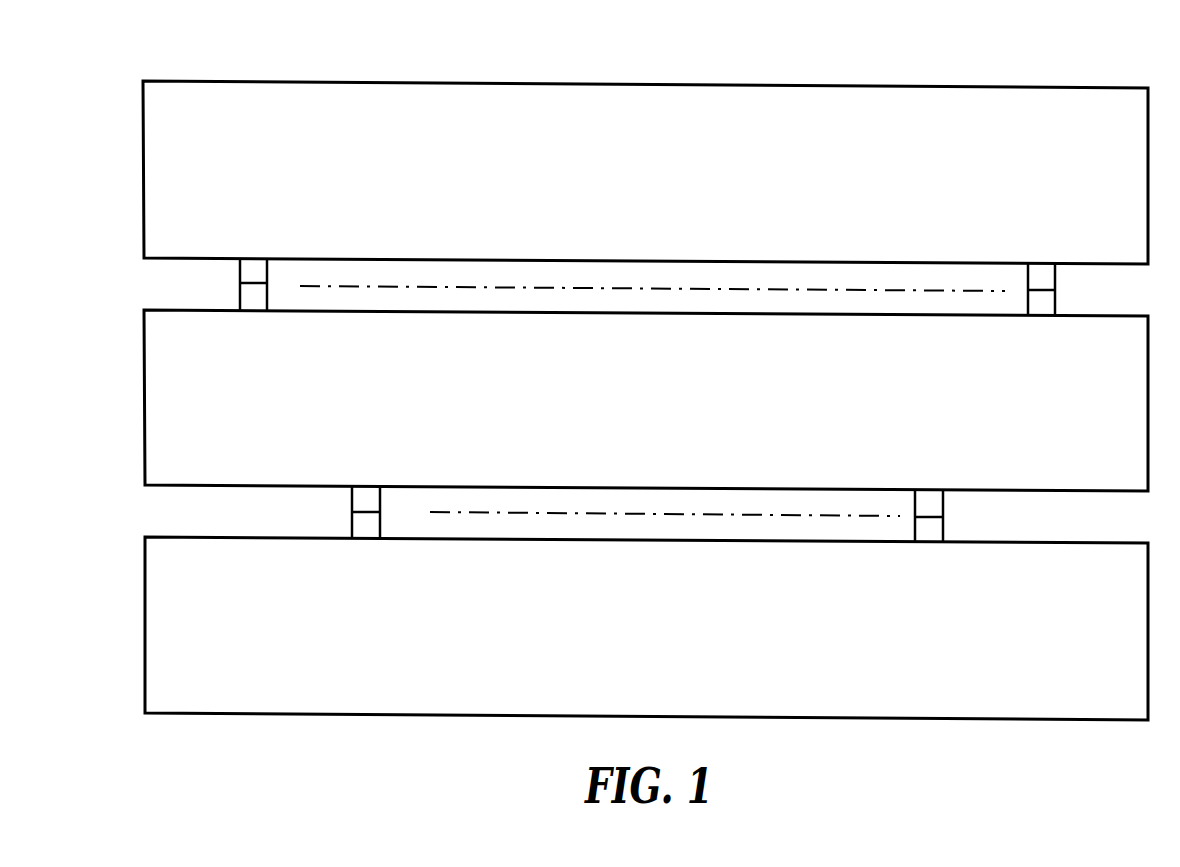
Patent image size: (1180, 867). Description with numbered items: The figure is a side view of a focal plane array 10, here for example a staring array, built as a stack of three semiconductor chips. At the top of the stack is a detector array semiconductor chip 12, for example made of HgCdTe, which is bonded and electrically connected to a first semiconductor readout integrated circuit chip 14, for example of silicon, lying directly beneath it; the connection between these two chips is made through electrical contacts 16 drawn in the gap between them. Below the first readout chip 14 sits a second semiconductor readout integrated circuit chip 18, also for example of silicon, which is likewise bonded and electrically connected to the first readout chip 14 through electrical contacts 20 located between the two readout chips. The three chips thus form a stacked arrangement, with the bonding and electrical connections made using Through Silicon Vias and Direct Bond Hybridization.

The focal plane array 10 is at (638, 40).
The detector array semiconductor chip 12 is at (663, 239).
The ROIC 1 chip 14 is at (663, 466).
The electrical contacts 16 is at (250, 297).
The ROIC 2 chip 18 is at (663, 693).
The electrical contacts 20 is at (362, 528).